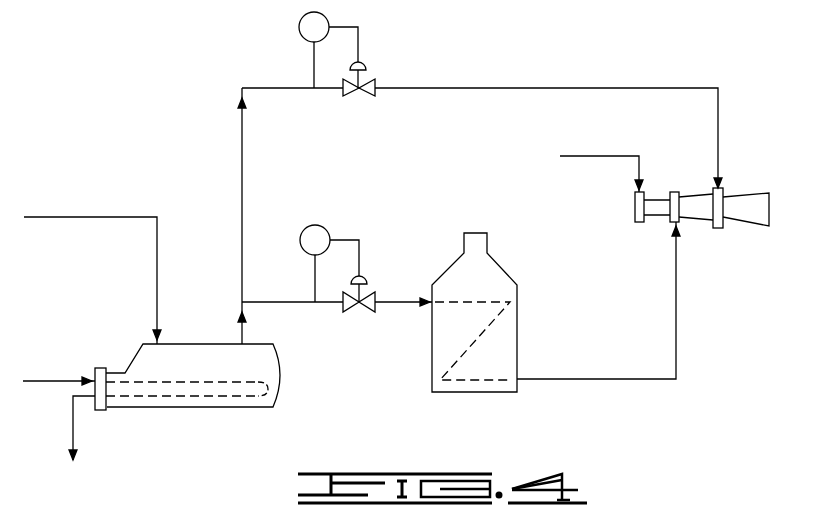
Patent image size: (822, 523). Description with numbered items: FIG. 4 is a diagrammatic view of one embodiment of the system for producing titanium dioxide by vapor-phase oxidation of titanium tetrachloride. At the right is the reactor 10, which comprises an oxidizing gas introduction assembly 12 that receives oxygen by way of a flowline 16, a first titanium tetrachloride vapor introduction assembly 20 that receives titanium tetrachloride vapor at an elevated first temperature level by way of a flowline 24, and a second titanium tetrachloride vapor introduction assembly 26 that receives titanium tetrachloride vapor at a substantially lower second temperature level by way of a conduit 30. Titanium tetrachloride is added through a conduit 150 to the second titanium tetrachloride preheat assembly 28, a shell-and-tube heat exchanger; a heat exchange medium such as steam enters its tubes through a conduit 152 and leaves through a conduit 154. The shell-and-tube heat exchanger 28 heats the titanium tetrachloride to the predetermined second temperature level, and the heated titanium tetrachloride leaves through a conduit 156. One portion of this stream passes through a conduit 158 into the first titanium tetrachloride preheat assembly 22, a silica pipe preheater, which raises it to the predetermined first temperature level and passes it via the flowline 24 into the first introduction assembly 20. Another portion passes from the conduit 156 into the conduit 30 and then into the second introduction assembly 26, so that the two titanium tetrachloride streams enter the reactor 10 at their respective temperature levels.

The reactor 10 is at (693, 180).
The oxidizing gas introduction assembly 12 is at (630, 227).
The flowline 16 is at (602, 152).
The first titanium tetrachloride vapor introduction assembly 20 is at (662, 231).
The first titanium tetrachloride preheat assembly 22 is at (519, 272).
The flowline 24 is at (677, 327).
The second titanium tetrachloride vapor introduction assembly 26 is at (729, 238).
The second titanium tetrachloride preheat assembly 28 is at (181, 422).
The flowline 30 is at (513, 86).
The conduit 150 is at (82, 216).
The conduit 152 is at (60, 376).
The conduit 154 is at (72, 425).
The conduit 156 is at (243, 168).
The conduit 158 is at (407, 305).